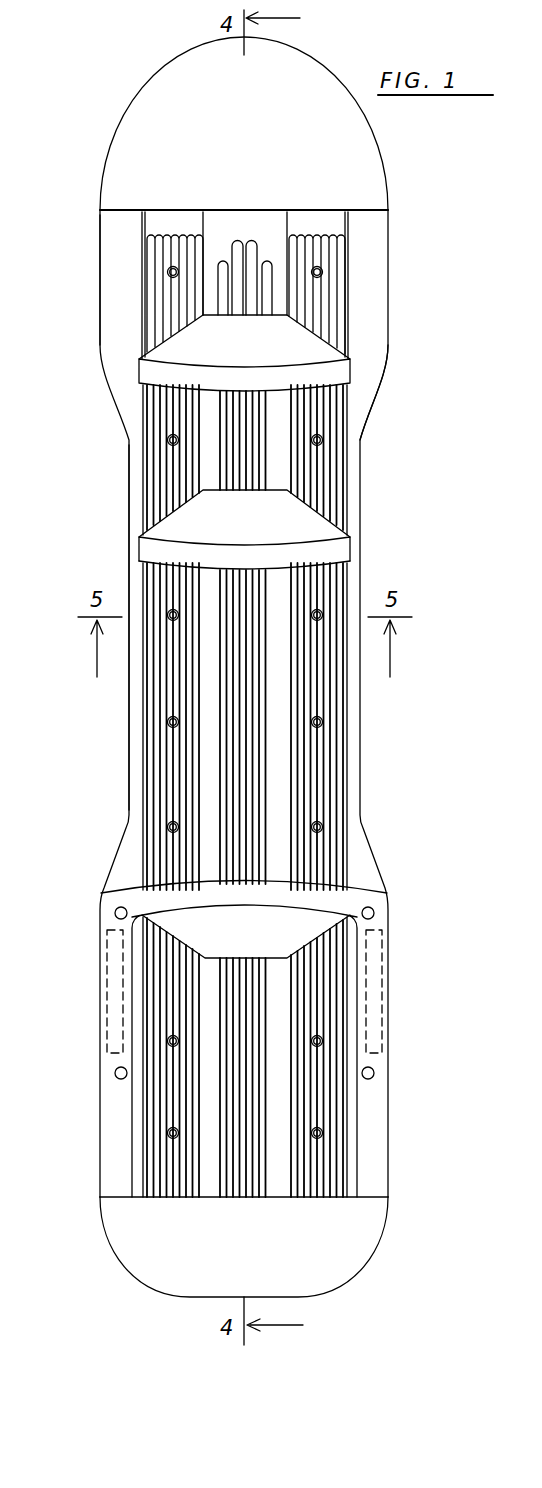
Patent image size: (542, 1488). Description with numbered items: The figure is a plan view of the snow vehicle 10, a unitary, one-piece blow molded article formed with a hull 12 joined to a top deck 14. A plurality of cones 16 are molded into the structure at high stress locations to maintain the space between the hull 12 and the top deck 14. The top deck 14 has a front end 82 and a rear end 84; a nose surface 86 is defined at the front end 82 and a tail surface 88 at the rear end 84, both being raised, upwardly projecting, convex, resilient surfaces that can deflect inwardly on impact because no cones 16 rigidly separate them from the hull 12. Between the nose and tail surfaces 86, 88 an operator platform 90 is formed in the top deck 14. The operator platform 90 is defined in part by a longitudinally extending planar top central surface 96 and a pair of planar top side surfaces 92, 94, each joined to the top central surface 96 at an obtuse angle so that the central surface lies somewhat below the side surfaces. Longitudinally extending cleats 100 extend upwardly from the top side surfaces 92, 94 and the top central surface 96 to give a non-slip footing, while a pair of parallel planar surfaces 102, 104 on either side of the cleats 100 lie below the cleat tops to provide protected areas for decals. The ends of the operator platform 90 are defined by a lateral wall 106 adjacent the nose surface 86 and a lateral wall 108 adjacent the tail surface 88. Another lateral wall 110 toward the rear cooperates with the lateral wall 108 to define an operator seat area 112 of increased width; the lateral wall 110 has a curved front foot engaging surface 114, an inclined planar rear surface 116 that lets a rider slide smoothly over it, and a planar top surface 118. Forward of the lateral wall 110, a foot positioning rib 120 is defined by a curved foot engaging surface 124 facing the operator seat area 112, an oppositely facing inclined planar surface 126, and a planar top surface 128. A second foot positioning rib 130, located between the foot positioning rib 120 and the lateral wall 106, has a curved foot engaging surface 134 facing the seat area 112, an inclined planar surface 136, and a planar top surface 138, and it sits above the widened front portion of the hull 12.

The snow vehicle 10 is at (84, 101).
The hull 12 is at (390, 278).
The top deck 14 is at (90, 336).
The cones 16 is at (168, 272).
The front end 82 is at (160, 45).
The rear end 84 is at (140, 1297).
The nose surface 86 is at (340, 152).
The tail surface 88 is at (360, 1226).
The operator platform 90 is at (82, 627).
The top side surface 92 is at (147, 787).
The top side surface 94 is at (337, 800).
The top central surface 96 is at (283, 762).
The cleats 100 is at (131, 740).
The planar surface 102 is at (207, 462).
The planar surface 104 is at (283, 465).
The lateral wall 106 is at (318, 211).
The lateral wall 108 is at (138, 1196).
The lateral wall 110 is at (350, 900).
The operator seat area 112 is at (283, 1105).
The front foot engaging surface 114 is at (283, 877).
The inclined planar rear surface 116 is at (300, 937).
The planar top surface 118 is at (170, 895).
The foot positioning rib 120 is at (350, 530).
The curved foot engaging surface 124 is at (170, 561).
The inclined planar surface 126 is at (197, 508).
The planar top surface 128 is at (352, 546).
The second foot positioning rib 130 is at (350, 357).
The curved foot engaging surface 134 is at (403, 392).
The inclined planar surface 136 is at (287, 343).
The planar top surface 138 is at (350, 373).